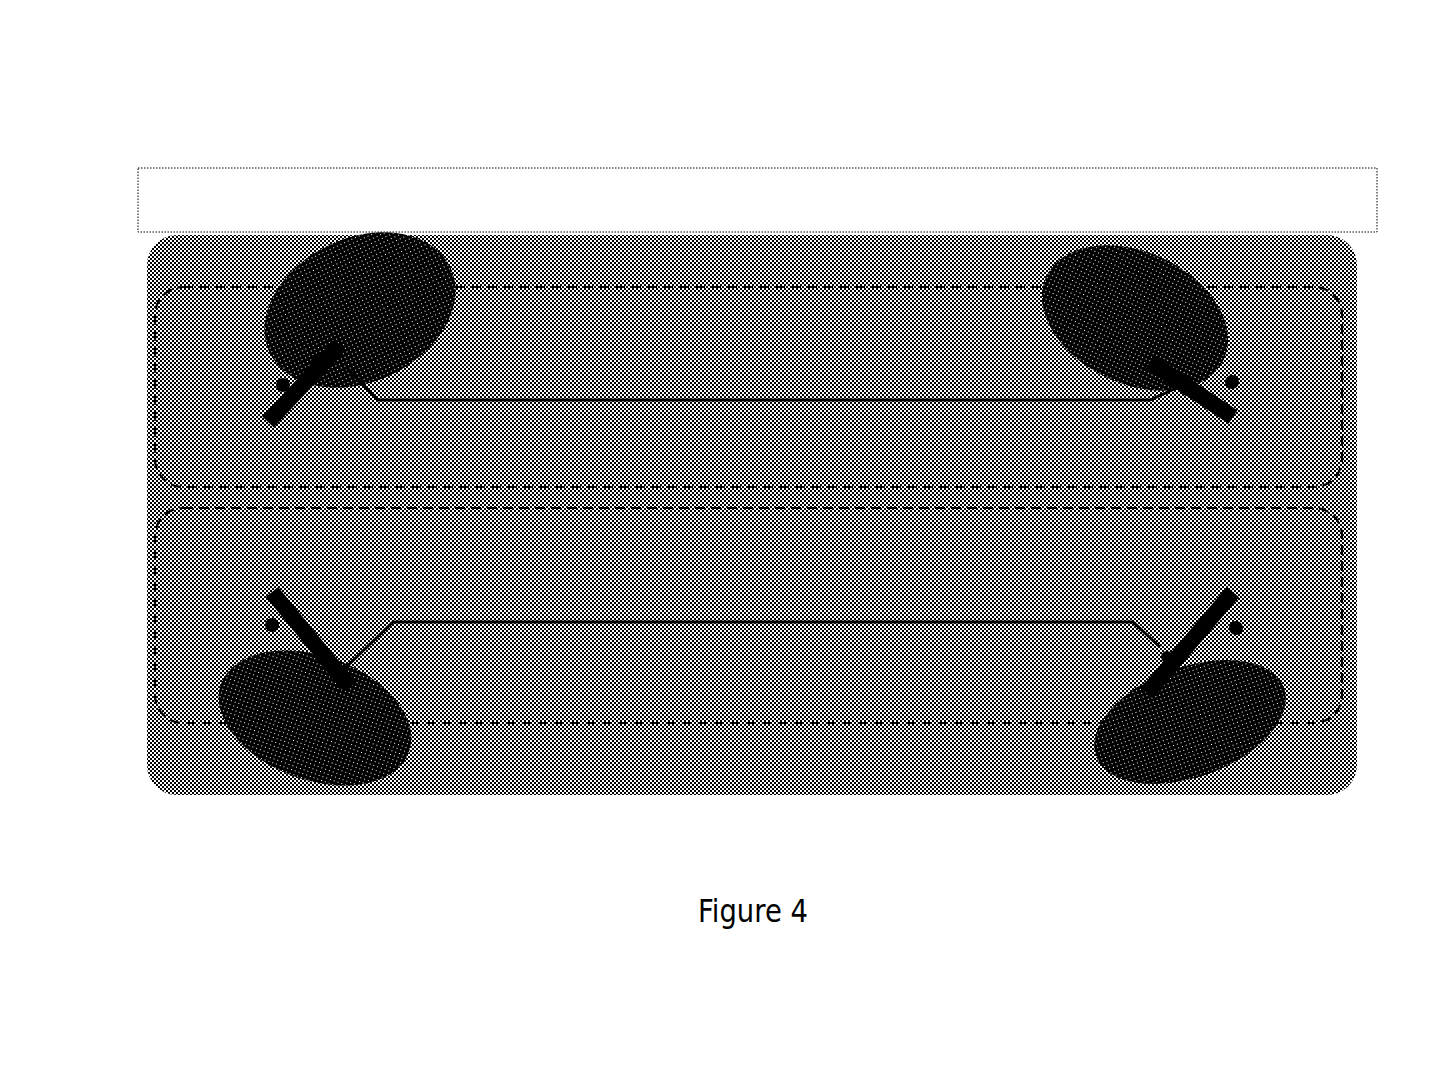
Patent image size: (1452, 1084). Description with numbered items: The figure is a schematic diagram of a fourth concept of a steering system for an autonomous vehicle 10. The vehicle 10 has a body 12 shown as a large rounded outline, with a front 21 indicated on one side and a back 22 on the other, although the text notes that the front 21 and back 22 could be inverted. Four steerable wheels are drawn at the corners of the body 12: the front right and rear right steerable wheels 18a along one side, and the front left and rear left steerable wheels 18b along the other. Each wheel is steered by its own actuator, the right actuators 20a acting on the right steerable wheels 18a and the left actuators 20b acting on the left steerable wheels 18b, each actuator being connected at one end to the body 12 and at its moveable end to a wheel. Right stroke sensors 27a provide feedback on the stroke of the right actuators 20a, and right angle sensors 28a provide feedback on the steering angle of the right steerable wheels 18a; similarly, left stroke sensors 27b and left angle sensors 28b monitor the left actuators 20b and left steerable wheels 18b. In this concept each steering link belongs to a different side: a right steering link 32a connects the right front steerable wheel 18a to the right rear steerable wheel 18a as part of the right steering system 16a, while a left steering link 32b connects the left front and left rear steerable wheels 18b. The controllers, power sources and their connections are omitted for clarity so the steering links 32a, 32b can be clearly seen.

The autonomous vehicle 10 is at (752, 417).
The body 12 is at (752, 253).
The right steering system 16a is at (547, 287).
The right steerable wheels 18a is at (310, 257).
The left steerable wheels 18b is at (295, 735).
The right actuators 20a is at (277, 380).
The left actuators 20b is at (267, 628).
The front 21 is at (138, 537).
The back 22 is at (1372, 460).
The right stroke sensors 27a is at (277, 381).
The left stroke sensors 27b is at (273, 625).
The right angle sensors 28a is at (317, 360).
The left angle sensors 28b is at (313, 643).
The right steering link 32a is at (900, 400).
The left steering link 32b is at (575, 622).